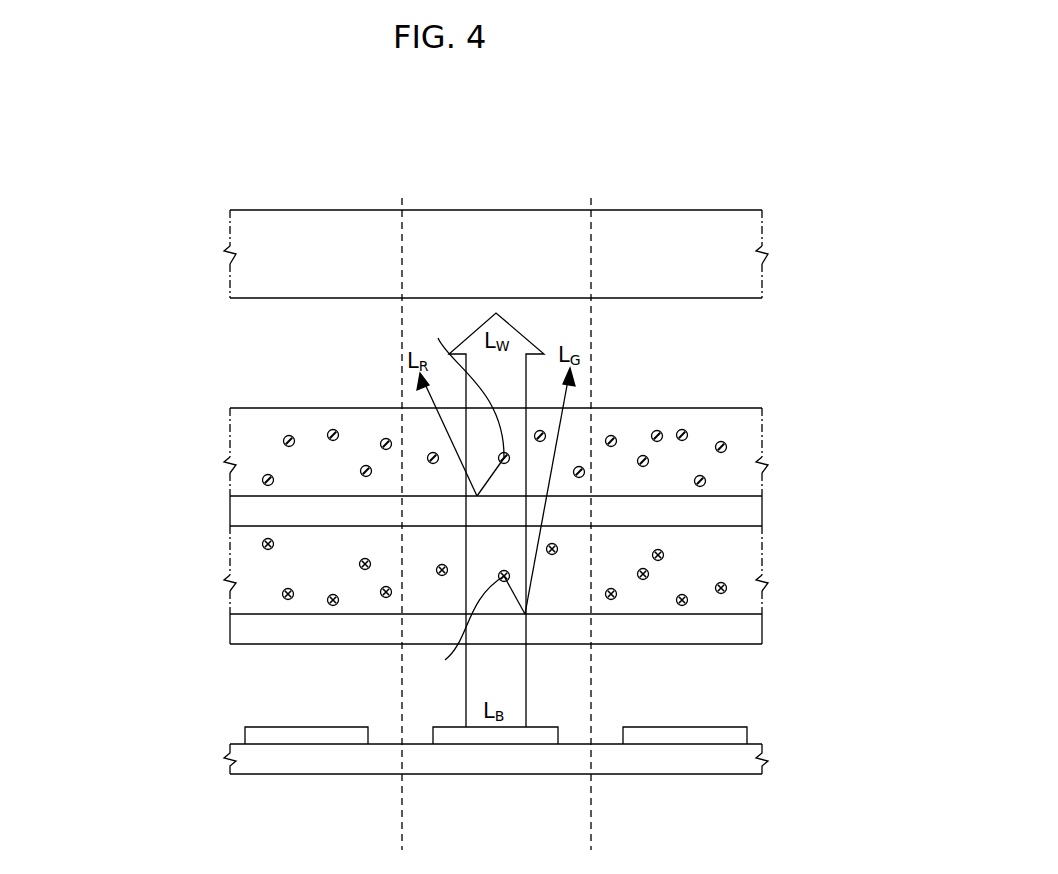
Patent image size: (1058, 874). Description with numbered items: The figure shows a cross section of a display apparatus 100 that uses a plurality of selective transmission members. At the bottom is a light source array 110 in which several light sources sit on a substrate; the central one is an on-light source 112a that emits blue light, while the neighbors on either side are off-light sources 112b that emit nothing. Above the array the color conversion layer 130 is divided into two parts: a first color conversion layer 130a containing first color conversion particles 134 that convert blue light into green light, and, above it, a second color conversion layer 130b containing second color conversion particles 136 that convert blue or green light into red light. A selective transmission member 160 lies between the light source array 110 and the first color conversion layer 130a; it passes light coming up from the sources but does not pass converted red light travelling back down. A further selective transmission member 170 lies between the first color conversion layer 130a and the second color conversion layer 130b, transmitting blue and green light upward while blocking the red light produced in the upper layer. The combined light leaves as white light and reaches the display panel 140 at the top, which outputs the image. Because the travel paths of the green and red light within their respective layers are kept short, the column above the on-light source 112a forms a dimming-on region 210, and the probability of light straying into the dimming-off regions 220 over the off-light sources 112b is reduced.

The display apparatus 100 is at (783, 182).
The light source array 110 is at (233, 770).
The on-light source 112a is at (550, 728).
The off-light source 112b is at (304, 730).
The color conversion layer 130 is at (148, 440).
The first color conversion layer 130a is at (233, 566).
The second color conversion layer 130b is at (233, 446).
The first color conversion particles 134 is at (469, 628).
The second color conversion particles 136 is at (465, 404).
The display panel 140 is at (233, 279).
The selective transmission member 160 is at (757, 632).
The selective transmission member 170 is at (757, 512).
The dimming-on region 210 is at (496, 524).
The dimming-off region 220 is at (496, 810).